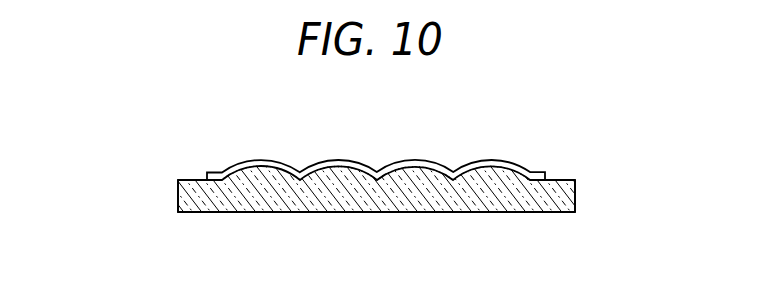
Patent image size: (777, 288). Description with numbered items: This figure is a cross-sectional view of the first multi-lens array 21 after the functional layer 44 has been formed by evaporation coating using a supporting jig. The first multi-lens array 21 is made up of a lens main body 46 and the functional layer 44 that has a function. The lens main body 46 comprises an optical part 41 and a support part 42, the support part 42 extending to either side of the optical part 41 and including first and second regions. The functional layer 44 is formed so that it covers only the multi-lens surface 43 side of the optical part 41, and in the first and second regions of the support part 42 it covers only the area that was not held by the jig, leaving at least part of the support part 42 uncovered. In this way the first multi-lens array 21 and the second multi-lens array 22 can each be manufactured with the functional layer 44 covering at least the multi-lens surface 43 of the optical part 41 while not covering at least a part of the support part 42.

The first multi-lens array 21 is at (435, 149).
The second multi-lens array 22 is at (376, 189).
The optical part 41 is at (252, 198).
The support part 42 is at (371, 178).
The multi-lens surface 43 is at (262, 164).
The functional layer 44 is at (428, 162).
The lens main body 46 is at (446, 216).